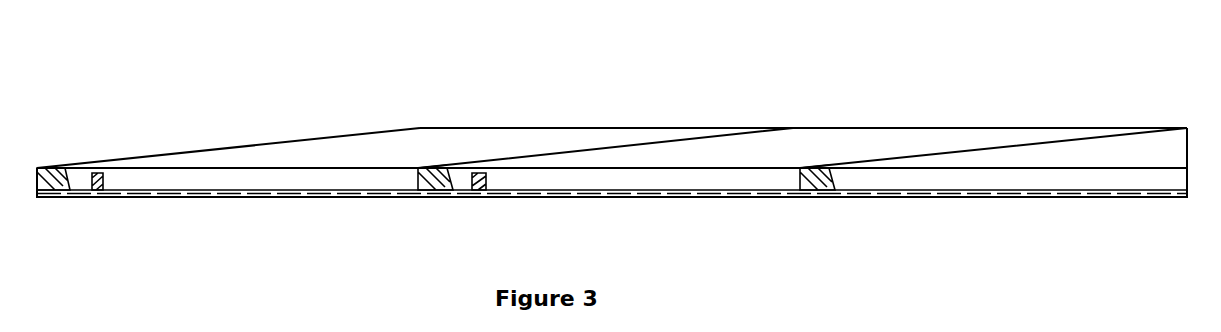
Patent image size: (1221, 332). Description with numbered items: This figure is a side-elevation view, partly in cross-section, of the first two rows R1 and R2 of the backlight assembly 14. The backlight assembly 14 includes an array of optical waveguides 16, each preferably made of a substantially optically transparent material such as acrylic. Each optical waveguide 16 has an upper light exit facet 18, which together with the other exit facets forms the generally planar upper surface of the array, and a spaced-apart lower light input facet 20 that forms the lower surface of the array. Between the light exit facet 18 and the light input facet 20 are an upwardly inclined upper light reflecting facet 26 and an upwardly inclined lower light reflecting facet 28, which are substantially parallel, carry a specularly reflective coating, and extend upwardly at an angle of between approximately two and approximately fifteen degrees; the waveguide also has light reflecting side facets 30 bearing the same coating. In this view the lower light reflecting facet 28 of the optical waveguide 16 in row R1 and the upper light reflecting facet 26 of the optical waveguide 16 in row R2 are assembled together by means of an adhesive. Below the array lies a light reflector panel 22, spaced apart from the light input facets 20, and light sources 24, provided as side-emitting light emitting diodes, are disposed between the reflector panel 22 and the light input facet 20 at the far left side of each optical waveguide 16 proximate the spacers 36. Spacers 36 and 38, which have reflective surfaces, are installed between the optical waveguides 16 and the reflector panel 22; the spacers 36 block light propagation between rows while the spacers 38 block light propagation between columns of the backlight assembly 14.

The backlight assembly 14 is at (292, 98).
The optical waveguide 16 is at (549, 110).
The light exit facet 18 is at (612, 128).
The light input facet 20 is at (220, 168).
The light reflector panel 22 is at (694, 193).
The light source 24 is at (98, 192).
The upper light reflecting facet 26 is at (225, 145).
The lower light reflecting facet 28 is at (708, 137).
The light reflecting side facet 30 is at (433, 148).
The spacer 36 is at (48, 193).
The spacer 38 is at (1043, 173).
The first row R1 is at (543, 40).
The second row R2 is at (913, 48).